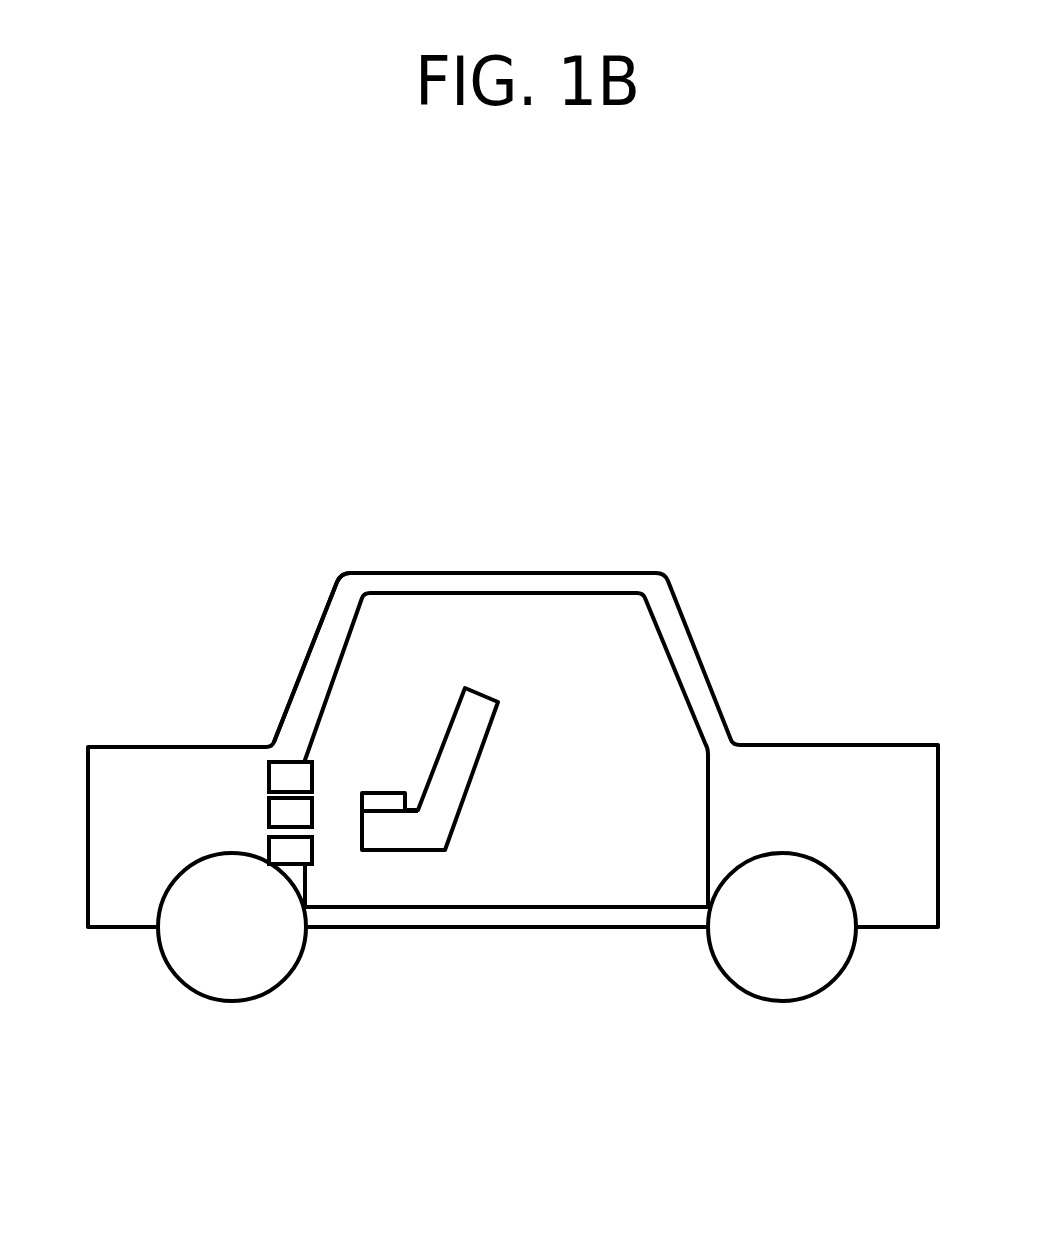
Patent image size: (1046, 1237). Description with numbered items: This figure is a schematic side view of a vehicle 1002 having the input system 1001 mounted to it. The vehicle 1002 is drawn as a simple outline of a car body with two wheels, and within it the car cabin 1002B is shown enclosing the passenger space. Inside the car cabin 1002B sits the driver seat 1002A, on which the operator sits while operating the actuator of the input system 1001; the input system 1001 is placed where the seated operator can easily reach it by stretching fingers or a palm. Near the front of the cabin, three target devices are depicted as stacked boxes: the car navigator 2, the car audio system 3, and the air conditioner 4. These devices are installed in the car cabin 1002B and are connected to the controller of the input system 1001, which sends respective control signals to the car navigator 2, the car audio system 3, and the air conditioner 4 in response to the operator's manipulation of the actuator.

The vehicle 1002 is at (513, 735).
The driver seat 1002A is at (463, 708).
The car cabin 1002B is at (378, 658).
The input system 1001 is at (368, 795).
The car navigator 2 is at (290, 771).
The car audio system 3 is at (283, 811).
The air conditioner 4 is at (295, 848).